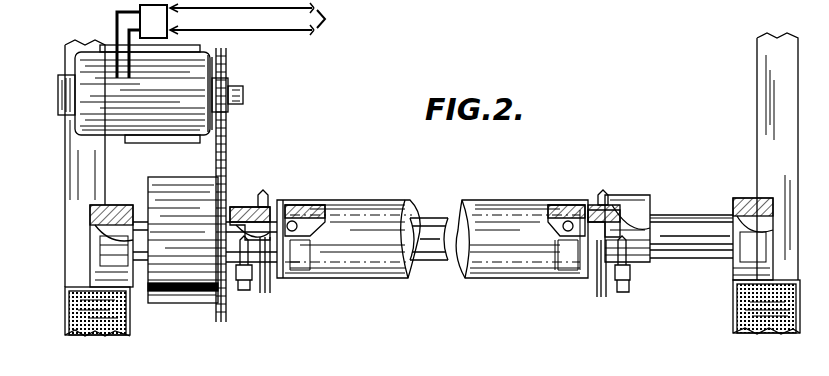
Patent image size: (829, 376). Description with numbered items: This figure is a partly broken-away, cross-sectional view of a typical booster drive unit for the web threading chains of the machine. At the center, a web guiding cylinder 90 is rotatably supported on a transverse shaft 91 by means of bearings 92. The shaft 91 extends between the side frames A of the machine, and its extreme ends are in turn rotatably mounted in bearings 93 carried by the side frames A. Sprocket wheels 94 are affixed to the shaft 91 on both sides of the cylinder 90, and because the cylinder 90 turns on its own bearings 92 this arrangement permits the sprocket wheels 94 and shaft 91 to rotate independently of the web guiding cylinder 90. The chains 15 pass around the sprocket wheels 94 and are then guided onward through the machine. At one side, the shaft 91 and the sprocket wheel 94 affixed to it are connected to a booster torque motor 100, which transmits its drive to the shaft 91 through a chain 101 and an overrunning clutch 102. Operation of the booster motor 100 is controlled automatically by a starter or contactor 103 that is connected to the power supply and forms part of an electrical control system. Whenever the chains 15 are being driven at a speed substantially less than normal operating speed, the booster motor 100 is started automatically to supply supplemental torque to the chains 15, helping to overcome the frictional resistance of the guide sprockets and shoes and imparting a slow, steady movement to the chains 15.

The chains 15 is at (270, 290).
The web guiding cylinder 90 is at (467, 277).
The transverse shaft 91 is at (420, 223).
The bearings 92 is at (287, 213).
The bearings 93 is at (757, 213).
The sprocket wheels 94 is at (263, 200).
The booster torque motor 100 is at (75, 130).
The chain 101 is at (221, 322).
The overrunning clutch 102 is at (177, 305).
The contactor 103 is at (138, 7).
The side frames A is at (757, 66).